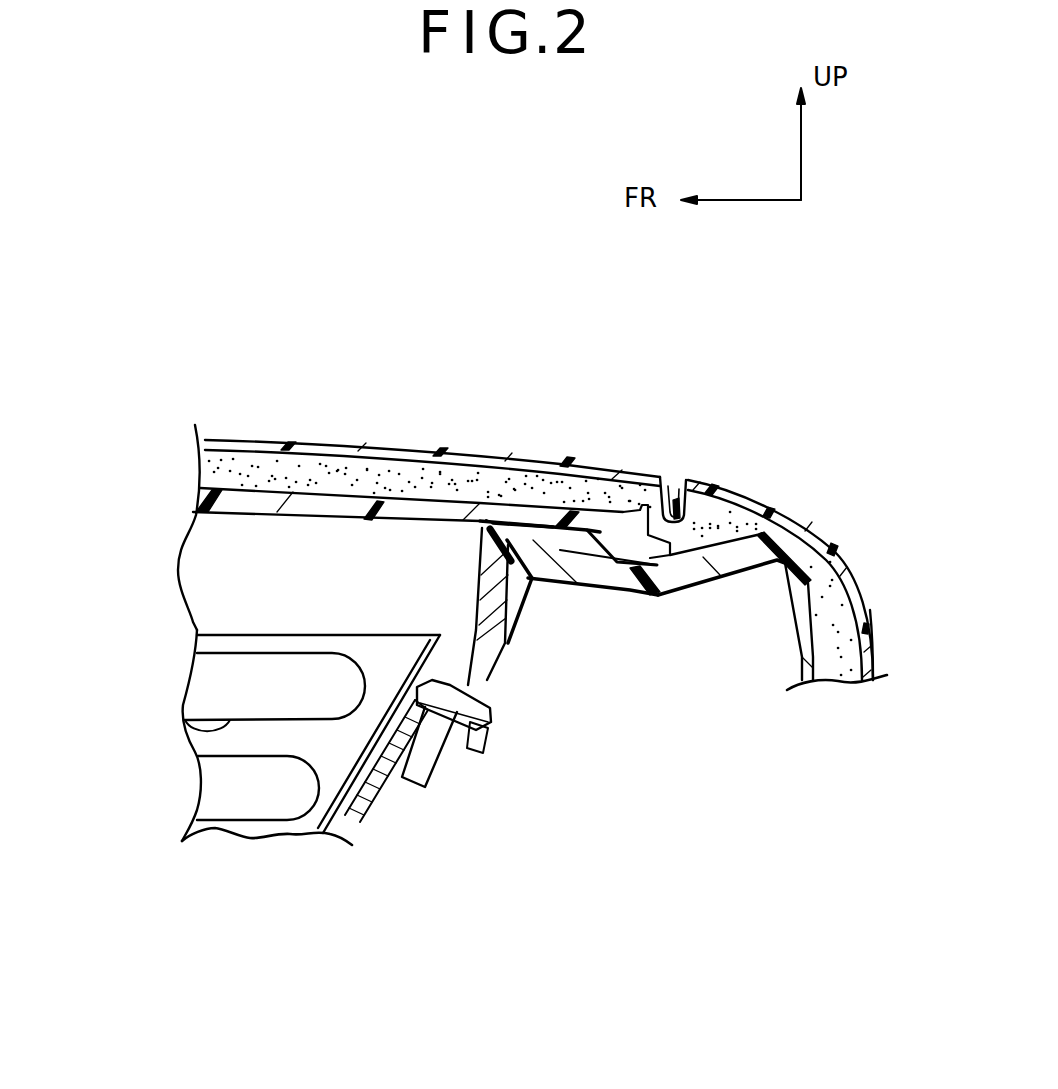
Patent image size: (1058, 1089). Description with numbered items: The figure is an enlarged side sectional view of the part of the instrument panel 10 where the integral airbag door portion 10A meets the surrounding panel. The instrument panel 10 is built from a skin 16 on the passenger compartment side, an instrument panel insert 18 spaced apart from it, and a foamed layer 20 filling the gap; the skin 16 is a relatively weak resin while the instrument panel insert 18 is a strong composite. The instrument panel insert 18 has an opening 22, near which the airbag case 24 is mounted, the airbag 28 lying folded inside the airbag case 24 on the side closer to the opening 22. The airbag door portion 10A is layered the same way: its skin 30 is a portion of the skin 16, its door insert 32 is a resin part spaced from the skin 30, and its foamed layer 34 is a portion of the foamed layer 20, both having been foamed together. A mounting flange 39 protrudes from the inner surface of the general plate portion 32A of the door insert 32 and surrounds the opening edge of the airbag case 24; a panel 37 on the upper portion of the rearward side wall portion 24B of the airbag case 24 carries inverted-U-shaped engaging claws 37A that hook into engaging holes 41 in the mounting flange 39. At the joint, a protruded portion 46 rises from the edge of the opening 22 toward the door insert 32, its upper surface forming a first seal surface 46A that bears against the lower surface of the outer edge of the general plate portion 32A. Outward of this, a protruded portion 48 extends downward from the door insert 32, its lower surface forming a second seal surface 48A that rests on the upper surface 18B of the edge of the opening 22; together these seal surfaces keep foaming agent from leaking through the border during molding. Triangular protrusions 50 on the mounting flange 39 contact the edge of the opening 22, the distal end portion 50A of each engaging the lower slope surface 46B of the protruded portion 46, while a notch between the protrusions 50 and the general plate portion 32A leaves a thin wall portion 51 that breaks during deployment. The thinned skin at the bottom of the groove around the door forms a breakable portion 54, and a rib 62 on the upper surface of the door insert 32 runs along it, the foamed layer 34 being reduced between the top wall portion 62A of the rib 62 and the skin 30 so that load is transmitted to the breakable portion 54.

The instrument panel 10 is at (871, 562).
The airbag door portion 10A is at (297, 440).
The skin 16 is at (880, 646).
The instrument panel insert 18 is at (780, 577).
The upper surface of peripheral edge portion of opening 18B is at (615, 537).
The foamed layer 20 is at (840, 672).
The opening 22 is at (520, 530).
The airbag case 24 is at (233, 634).
The rearward side wall portion 24B is at (335, 838).
The airbag 28 is at (184, 722).
The skin 30 is at (404, 443).
The door insert 32 is at (307, 513).
The general plate portion 32A is at (238, 517).
The foamed layer 34 is at (227, 470).
The panel 37 is at (376, 814).
The engaging claws 37A is at (486, 753).
The mounting flange 39 is at (495, 684).
The engaging holes 41 is at (376, 800).
The protruded portion 46 is at (505, 572).
The first seal surface 46A is at (572, 529).
The lower slope surface 46B is at (481, 600).
The protruded portion 48 is at (652, 552).
The second seal surface 48A is at (637, 573).
The protrusions 50 is at (527, 623).
The distal end portion 50A is at (545, 590).
The thin wall portion 51 is at (493, 521).
The breakable portion 54 is at (680, 553).
The rib 62 is at (625, 508).
The top wall portion 62A is at (668, 498).